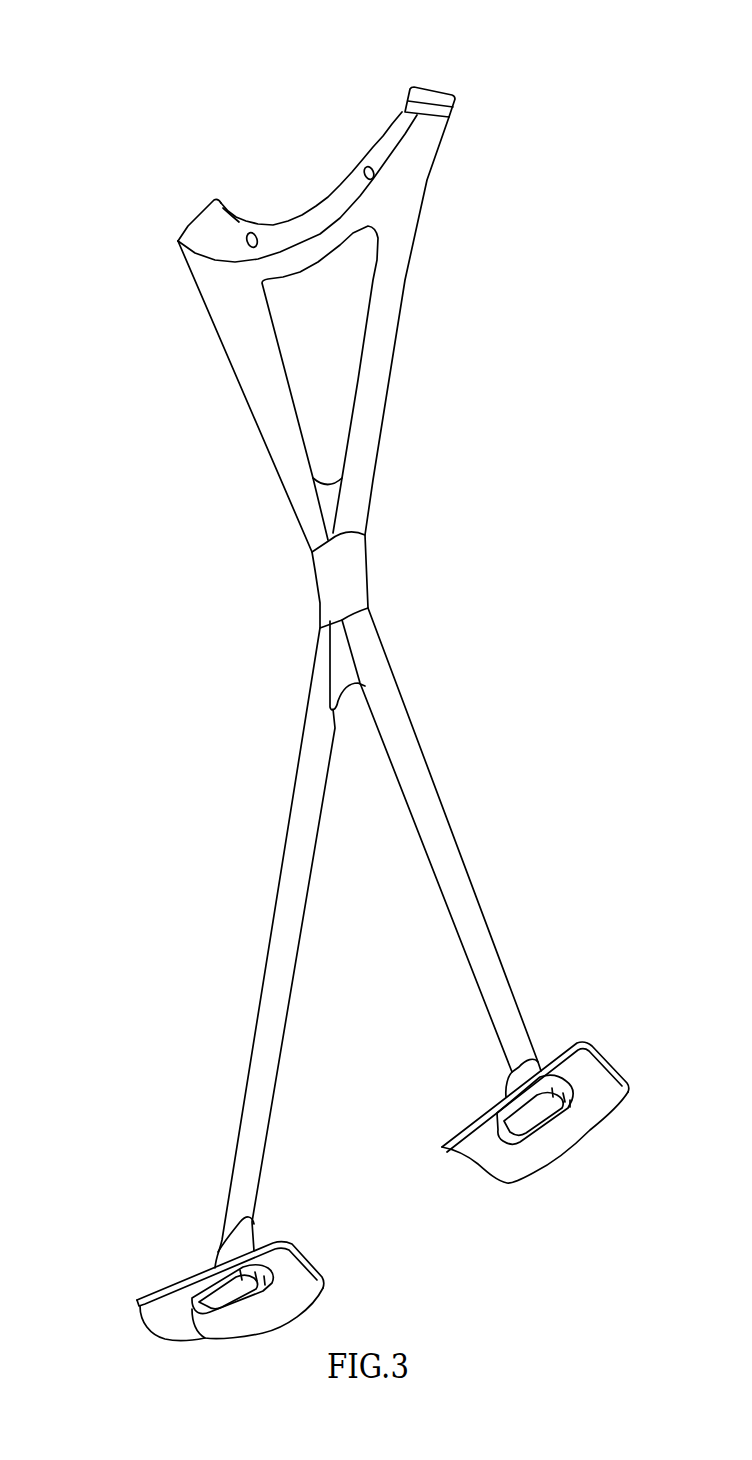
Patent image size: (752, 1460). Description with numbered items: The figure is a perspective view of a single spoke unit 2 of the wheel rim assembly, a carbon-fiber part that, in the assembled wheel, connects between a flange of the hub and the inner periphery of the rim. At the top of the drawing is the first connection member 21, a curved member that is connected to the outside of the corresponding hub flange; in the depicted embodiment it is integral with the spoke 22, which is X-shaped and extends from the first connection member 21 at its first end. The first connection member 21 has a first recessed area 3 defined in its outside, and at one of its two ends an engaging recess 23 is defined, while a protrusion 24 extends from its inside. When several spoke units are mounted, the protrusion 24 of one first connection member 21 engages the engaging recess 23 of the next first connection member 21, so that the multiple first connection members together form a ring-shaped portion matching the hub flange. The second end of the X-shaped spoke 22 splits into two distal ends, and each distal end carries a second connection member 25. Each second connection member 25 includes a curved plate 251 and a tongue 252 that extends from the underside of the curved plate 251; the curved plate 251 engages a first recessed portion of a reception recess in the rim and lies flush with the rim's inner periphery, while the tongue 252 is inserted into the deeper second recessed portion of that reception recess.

The spoke unit 2 is at (468, 408).
The first connection member 21 is at (287, 13).
The spoke 22 is at (348, 580).
The engaging recess 23 is at (403, 100).
The protrusion 24 is at (225, 203).
The second connection member 25 is at (126, 1134).
The curved plate 251 is at (176, 1283).
The tongue 252 is at (136, 1302).
The first recessed area 3 is at (206, 231).